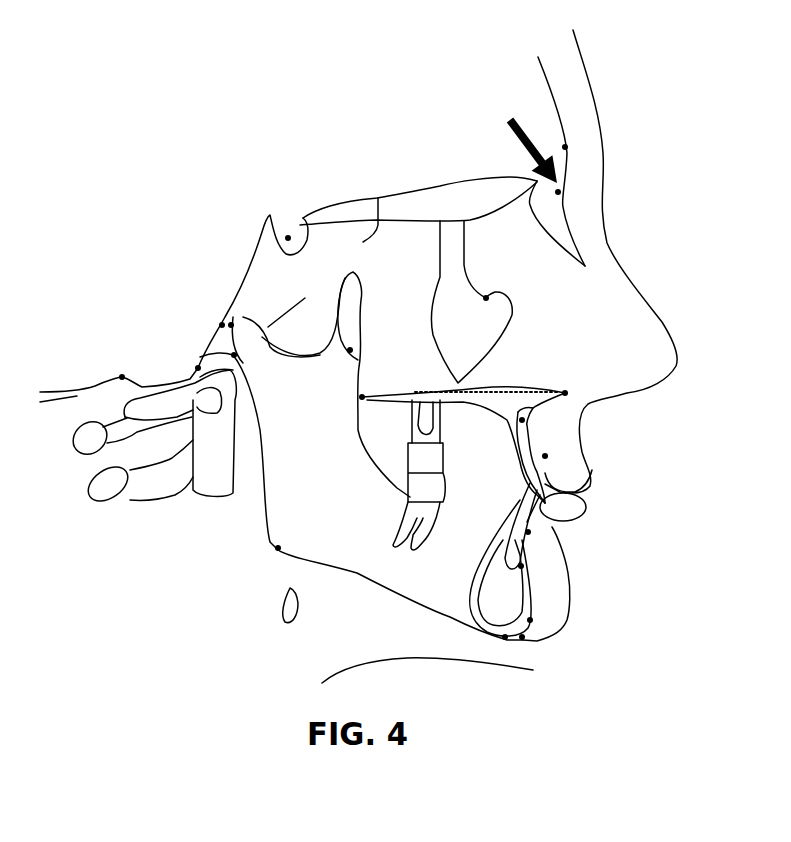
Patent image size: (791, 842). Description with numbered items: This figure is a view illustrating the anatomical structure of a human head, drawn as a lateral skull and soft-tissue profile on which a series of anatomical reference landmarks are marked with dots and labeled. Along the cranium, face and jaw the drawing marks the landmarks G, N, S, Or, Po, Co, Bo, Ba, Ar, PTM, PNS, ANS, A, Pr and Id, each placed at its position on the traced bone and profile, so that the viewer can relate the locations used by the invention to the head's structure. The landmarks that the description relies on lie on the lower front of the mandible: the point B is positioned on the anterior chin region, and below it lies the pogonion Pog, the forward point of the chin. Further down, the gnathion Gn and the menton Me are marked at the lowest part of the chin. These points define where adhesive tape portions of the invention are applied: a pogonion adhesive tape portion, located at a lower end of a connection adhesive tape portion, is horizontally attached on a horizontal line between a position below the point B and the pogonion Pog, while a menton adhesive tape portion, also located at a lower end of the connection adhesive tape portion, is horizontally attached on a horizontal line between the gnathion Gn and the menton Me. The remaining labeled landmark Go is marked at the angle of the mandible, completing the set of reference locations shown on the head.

The glabella G is at (575, 134).
The nasion N is at (571, 195).
The sella S is at (290, 225).
The orbitale Or is at (501, 287).
The porion Po is at (206, 310).
The condylion Co is at (242, 311).
The Bolton point Bo is at (103, 369).
The basion Ba is at (177, 369).
The articulare Ar is at (250, 356).
The pterygomaxillary fissure PTM is at (376, 353).
The posterior nasal spine PNS is at (386, 387).
The anterior nasal spine ANS is at (593, 395).
The A point (subspinale) A is at (535, 422).
The prosthion Pr is at (560, 459).
The infradentale Id is at (544, 534).
The point B is at (533, 568).
The pogonion Pog is at (556, 623).
The gnathion Gn is at (539, 649).
The menton Me is at (503, 650).
The gonion Go is at (277, 562).